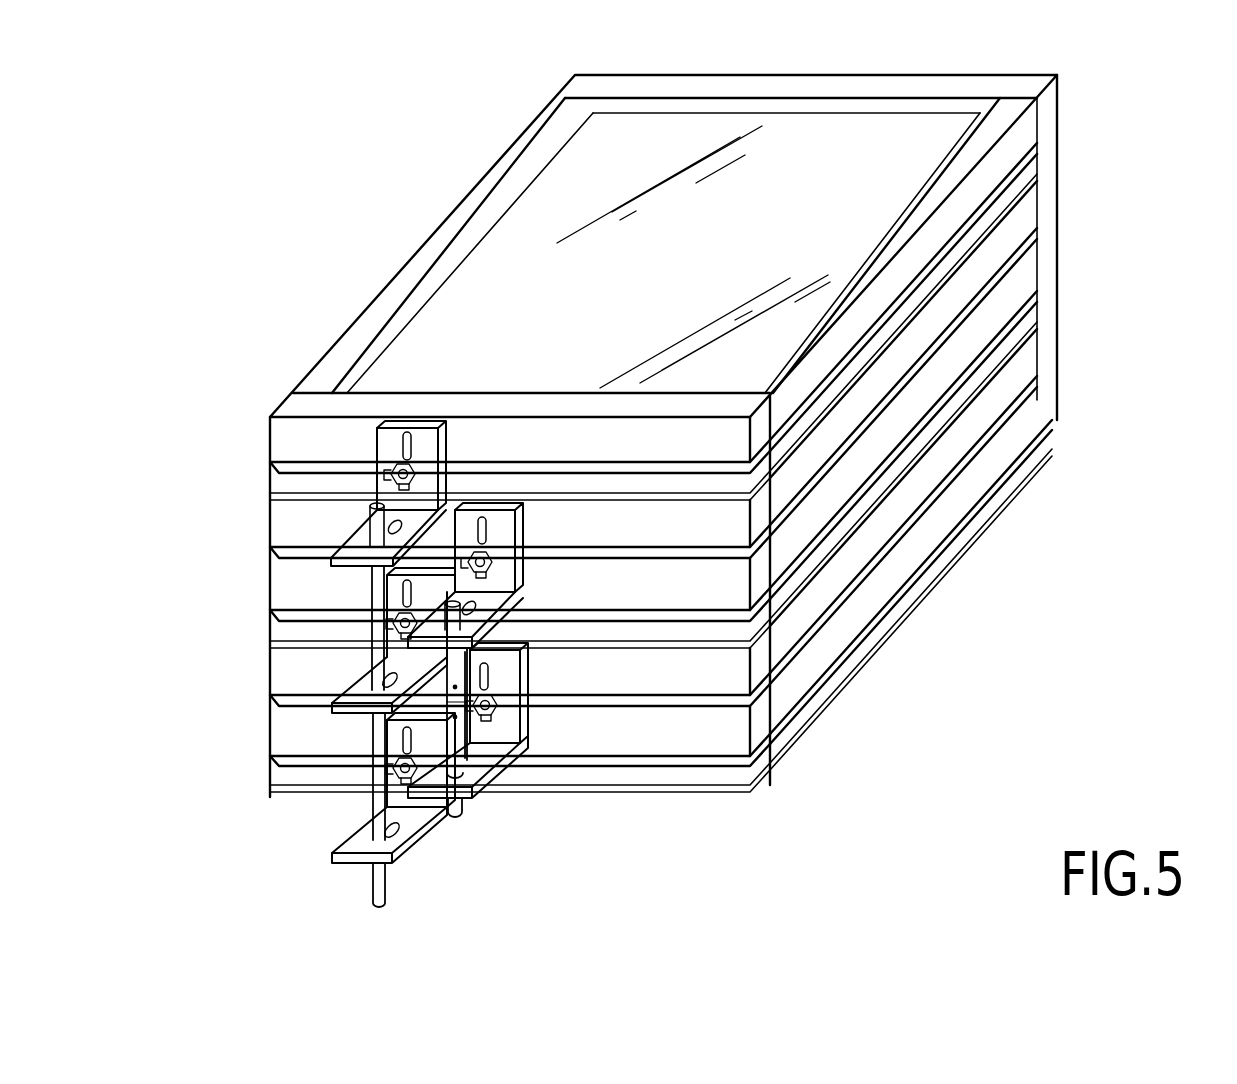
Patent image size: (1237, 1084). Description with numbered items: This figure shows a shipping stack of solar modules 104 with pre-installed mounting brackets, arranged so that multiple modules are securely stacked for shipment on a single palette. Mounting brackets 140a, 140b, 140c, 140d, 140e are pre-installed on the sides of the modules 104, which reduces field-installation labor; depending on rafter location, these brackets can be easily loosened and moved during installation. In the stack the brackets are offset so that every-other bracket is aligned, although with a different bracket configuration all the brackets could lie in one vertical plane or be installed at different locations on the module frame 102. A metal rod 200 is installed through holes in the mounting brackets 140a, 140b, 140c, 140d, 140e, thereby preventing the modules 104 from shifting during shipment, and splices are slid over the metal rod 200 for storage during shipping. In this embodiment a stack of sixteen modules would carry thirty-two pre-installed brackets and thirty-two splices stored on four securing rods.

The frame 102 is at (1057, 103).
The module 104 is at (477, 740).
The mounting bracket 140a is at (360, 540).
The mounting bracket 140b is at (508, 580).
The mounting bracket 140c is at (362, 690).
The mounting bracket 140d is at (512, 675).
The mounting bracket 140e is at (340, 825).
The metal rod 200 is at (362, 898).